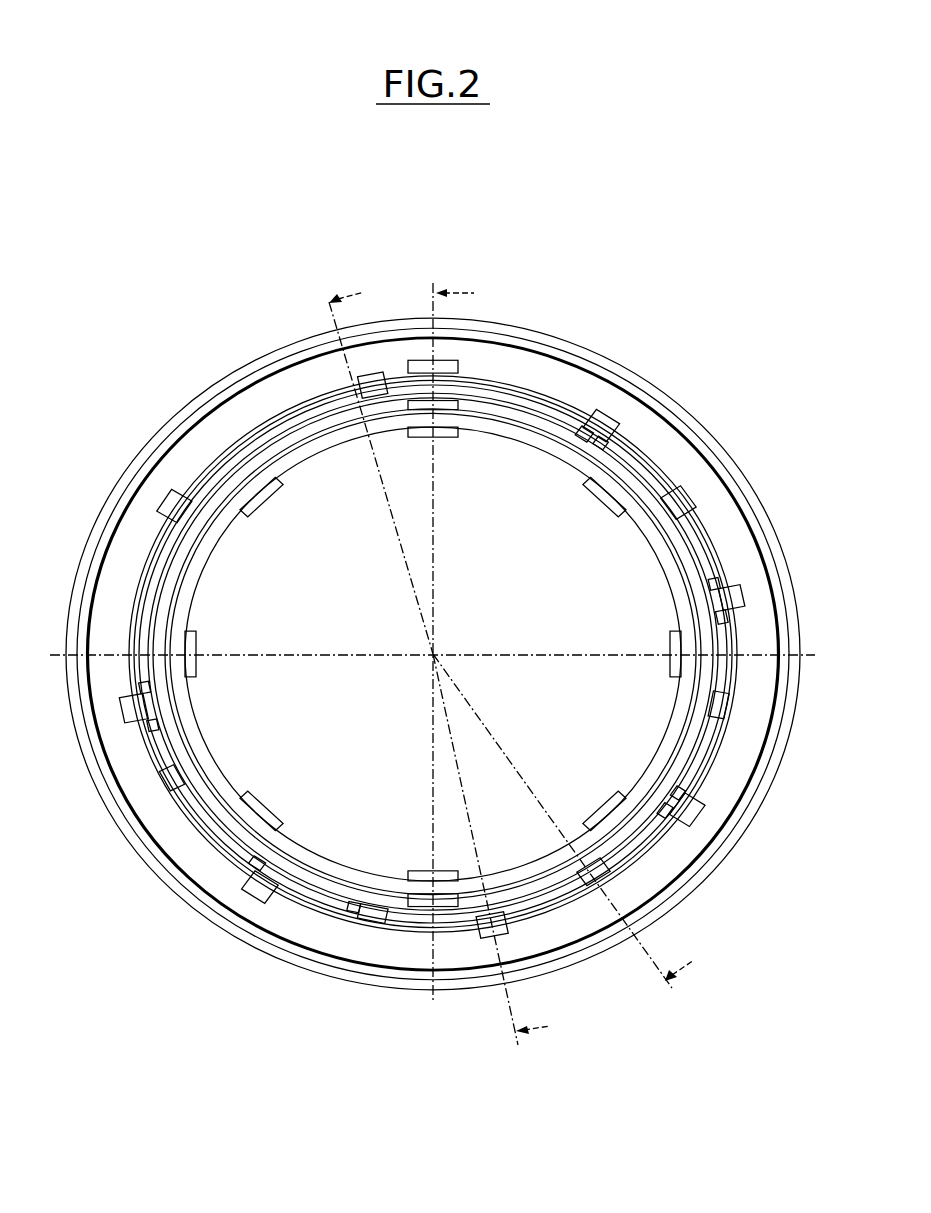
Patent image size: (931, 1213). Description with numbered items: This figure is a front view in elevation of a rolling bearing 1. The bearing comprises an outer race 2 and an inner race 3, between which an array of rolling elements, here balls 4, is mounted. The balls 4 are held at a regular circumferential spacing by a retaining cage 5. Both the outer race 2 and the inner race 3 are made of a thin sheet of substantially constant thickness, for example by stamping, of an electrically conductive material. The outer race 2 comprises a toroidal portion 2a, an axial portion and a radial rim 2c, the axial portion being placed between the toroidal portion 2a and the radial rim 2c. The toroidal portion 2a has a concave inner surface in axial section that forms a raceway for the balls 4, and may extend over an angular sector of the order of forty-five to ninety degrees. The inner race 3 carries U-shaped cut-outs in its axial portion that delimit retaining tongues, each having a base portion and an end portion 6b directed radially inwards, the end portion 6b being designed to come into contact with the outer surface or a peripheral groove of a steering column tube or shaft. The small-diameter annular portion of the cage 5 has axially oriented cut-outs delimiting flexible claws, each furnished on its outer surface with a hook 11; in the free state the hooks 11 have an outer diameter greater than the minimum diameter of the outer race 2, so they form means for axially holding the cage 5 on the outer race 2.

The rolling bearing 1 is at (432, 659).
The outer race 2 is at (433, 654).
The toroidal portion 2a is at (433, 654).
The radial rim 2c is at (433, 654).
The inner race 3 is at (433, 633).
The balls 4 is at (433, 654).
The retaining cage 5 is at (433, 654).
The end portion 6b is at (432, 658).
The hook 11 is at (373, 385).